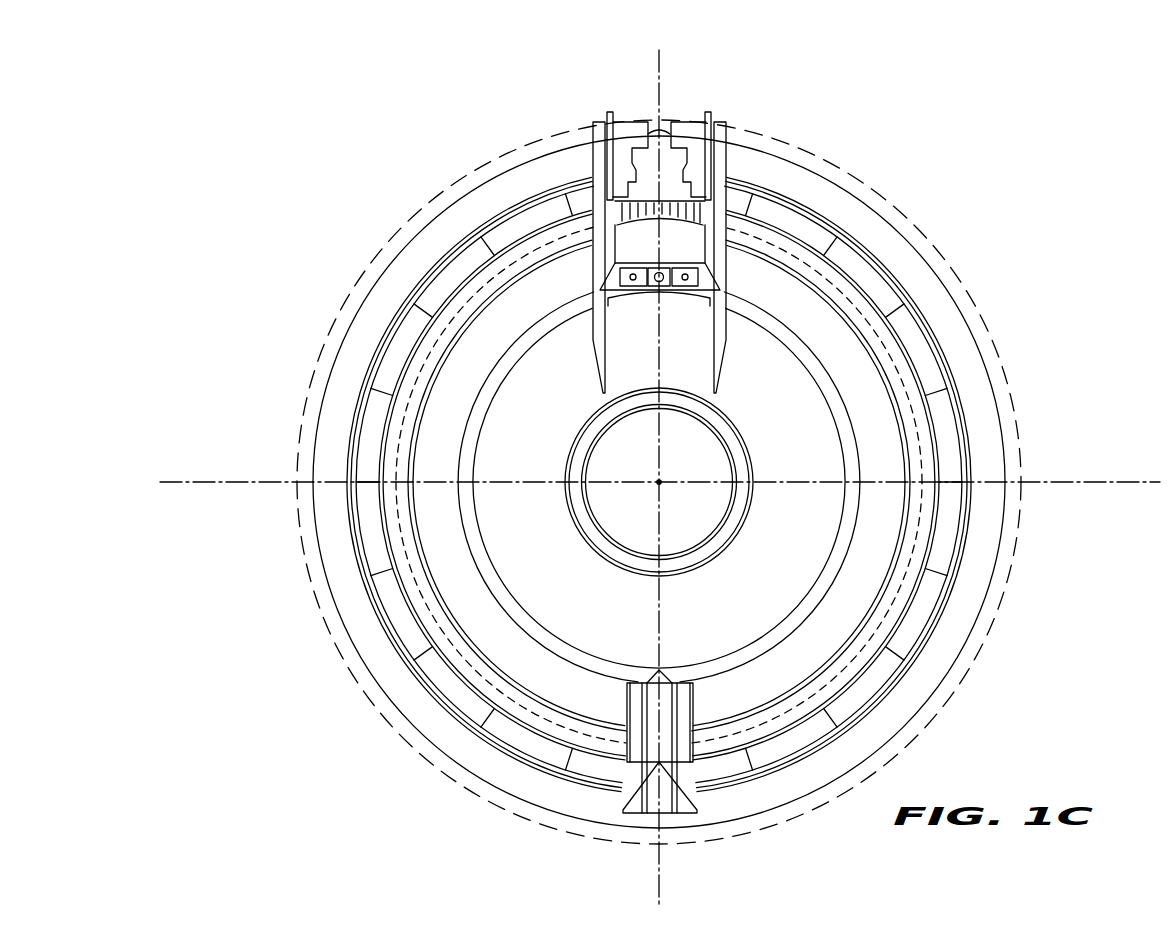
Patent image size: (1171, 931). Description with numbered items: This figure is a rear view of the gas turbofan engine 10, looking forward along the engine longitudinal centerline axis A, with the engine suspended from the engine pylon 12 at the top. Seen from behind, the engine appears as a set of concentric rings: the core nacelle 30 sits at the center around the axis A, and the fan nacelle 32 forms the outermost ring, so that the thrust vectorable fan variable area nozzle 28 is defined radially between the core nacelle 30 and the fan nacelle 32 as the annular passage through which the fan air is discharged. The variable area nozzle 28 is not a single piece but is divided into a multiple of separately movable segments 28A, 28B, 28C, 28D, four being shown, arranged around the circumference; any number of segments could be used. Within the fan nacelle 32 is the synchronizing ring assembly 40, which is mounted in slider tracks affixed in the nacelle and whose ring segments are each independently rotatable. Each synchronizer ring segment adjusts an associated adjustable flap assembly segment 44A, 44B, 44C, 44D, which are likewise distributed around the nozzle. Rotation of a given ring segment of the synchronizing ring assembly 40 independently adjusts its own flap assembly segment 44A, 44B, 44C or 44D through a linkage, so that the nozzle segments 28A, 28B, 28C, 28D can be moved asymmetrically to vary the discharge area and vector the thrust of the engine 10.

The gas turbofan engine 10 is at (870, 146).
The engine pylon 12 is at (683, 133).
The variable area nozzle 28 is at (938, 407).
The movable segment 28A is at (355, 272).
The movable segment 28B is at (358, 700).
The movable segment 28C is at (995, 648).
The movable segment 28D is at (987, 323).
The core nacelle 30 is at (708, 464).
The fan nacelle 32 is at (905, 262).
The synchronizing ring assembly 40 is at (898, 447).
The adjustable flap assembly segment 44A is at (420, 383).
The adjustable flap assembly segment 44B is at (537, 717).
The adjustable flap assembly segment 44C is at (765, 718).
The adjustable flap assembly segment 44D is at (882, 344).
The engine longitudinal centerline axis A is at (661, 497).